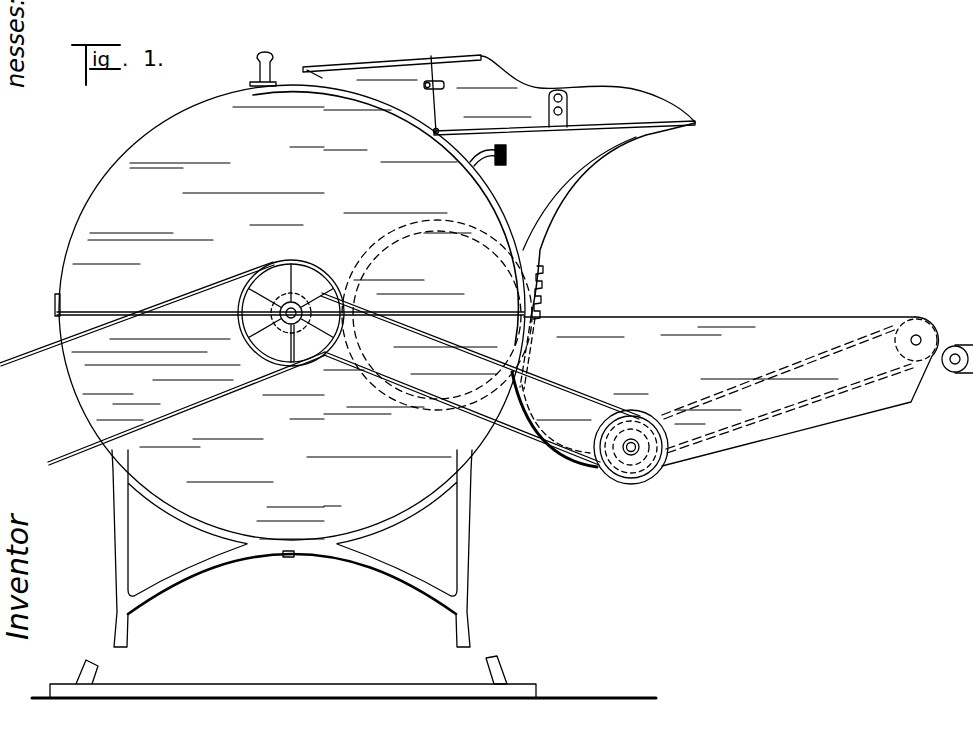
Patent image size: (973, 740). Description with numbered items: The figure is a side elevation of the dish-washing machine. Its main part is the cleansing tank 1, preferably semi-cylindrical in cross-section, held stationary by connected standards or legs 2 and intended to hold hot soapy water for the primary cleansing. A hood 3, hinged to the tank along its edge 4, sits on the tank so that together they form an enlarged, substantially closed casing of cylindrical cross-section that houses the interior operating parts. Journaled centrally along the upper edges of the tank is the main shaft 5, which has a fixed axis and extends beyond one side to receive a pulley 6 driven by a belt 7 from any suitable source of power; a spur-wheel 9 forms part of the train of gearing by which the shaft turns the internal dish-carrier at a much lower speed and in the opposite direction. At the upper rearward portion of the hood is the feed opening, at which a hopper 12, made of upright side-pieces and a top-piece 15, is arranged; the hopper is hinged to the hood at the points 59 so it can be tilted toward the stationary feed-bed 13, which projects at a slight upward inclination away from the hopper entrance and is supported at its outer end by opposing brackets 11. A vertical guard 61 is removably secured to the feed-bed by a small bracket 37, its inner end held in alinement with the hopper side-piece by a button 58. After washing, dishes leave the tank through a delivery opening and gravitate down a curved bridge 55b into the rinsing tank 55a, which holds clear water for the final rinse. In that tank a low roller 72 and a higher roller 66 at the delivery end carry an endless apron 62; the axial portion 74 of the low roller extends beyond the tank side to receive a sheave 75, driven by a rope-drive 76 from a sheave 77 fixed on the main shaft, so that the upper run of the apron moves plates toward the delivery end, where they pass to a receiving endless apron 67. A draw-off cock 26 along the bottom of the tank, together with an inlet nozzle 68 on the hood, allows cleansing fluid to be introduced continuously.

The cleansing tank 1 is at (82, 377).
The standards or legs 2 is at (128, 539).
The hood 3 is at (292, 312).
The hinge edge of hood 4 is at (56, 298).
The main shaft 5 is at (284, 325).
The pulley 6 is at (243, 311).
The belt 7 is at (86, 448).
The spur-wheel 9 is at (543, 292).
The brackets 11 is at (571, 184).
The hopper 12 is at (445, 83).
The feed-bed 13 is at (577, 128).
The top-piece 15 is at (363, 59).
The draw-off cock 26 is at (285, 560).
The small bracket 37 is at (568, 96).
The rinsing tank 55a is at (686, 311).
The bridge 55b is at (554, 429).
The button 58 is at (432, 91).
The hinge points of hopper 59 is at (434, 134).
The vertical guard 61 is at (530, 80).
The endless apron 62 is at (806, 398).
The roller 66 is at (911, 331).
The endless apron 67 is at (957, 346).
The inlet nozzle 68 is at (503, 166).
The roller 72 is at (638, 436).
The axial portion of roller 74 is at (627, 455).
The sheave 75 is at (632, 473).
The rope-drive 76 is at (478, 416).
The sheave 77 is at (291, 296).